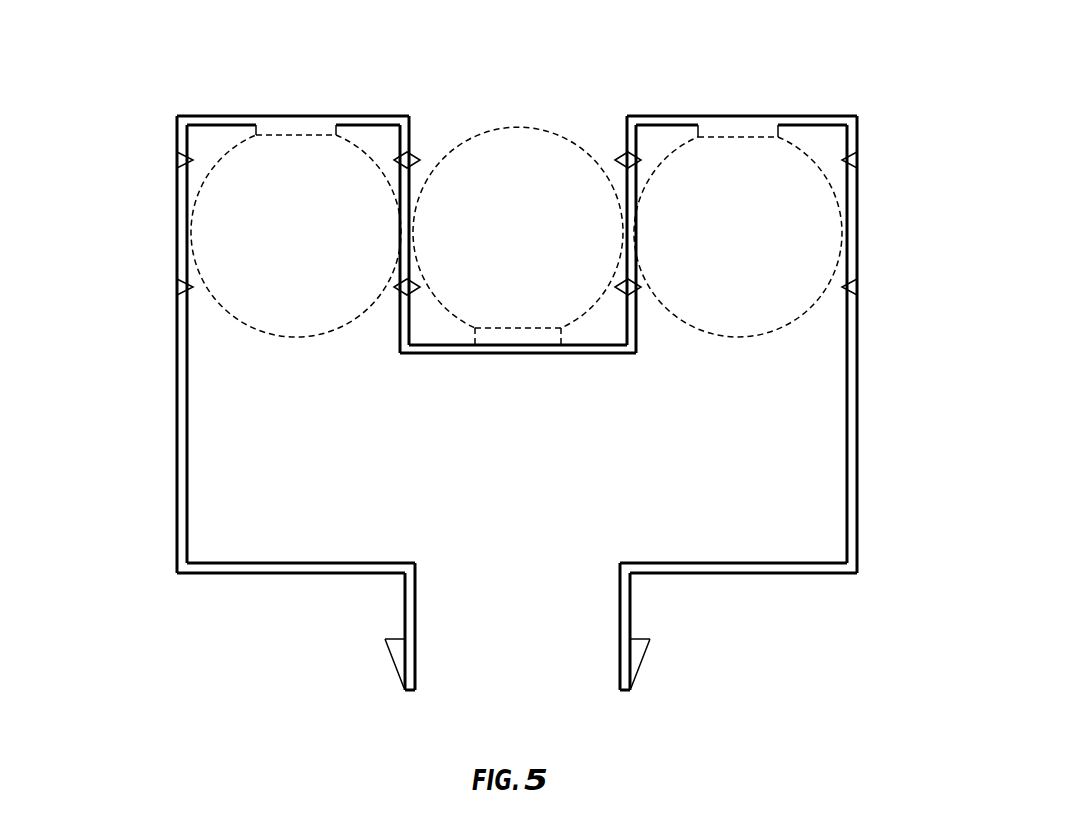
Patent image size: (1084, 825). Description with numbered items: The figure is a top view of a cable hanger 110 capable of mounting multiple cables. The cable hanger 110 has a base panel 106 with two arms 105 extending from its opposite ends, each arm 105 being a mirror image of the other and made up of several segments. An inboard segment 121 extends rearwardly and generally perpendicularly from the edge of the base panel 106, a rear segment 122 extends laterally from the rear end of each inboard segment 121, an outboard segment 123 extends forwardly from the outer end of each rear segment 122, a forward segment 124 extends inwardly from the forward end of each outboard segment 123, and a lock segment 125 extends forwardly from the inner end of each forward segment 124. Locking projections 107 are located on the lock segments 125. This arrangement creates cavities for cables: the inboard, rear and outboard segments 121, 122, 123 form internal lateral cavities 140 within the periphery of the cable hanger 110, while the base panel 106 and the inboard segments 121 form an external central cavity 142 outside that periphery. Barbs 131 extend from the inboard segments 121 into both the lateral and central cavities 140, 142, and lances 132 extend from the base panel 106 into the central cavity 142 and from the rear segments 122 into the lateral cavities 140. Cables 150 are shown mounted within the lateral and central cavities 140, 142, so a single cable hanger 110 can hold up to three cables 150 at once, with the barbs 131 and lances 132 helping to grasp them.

The arm 105 is at (127, 283).
The base panel 106 is at (588, 353).
The locking projection 107 is at (398, 653).
The cable hanger 110 is at (889, 298).
The inboard segment 121 is at (660, 367).
The rear segment 122 is at (380, 117).
The outboard segment 123 is at (177, 489).
The forward segment 124 is at (256, 573).
The lock segment 125 is at (620, 617).
The barb 131 is at (641, 157).
The lance 132 is at (762, 127).
The lateral cavity 140 is at (229, 342).
The central cavity 142 is at (617, 150).
The cable 150 is at (192, 232).